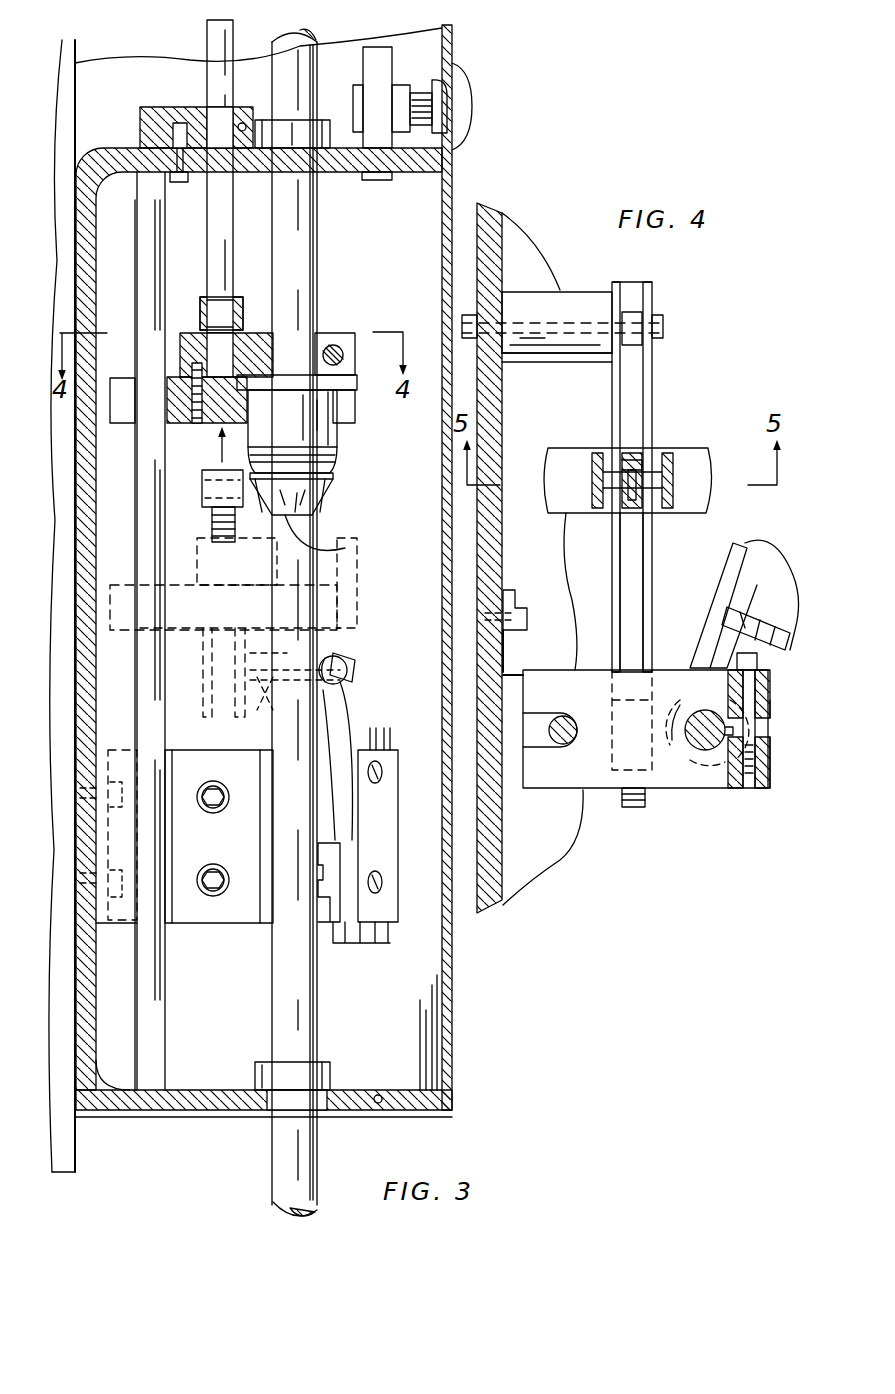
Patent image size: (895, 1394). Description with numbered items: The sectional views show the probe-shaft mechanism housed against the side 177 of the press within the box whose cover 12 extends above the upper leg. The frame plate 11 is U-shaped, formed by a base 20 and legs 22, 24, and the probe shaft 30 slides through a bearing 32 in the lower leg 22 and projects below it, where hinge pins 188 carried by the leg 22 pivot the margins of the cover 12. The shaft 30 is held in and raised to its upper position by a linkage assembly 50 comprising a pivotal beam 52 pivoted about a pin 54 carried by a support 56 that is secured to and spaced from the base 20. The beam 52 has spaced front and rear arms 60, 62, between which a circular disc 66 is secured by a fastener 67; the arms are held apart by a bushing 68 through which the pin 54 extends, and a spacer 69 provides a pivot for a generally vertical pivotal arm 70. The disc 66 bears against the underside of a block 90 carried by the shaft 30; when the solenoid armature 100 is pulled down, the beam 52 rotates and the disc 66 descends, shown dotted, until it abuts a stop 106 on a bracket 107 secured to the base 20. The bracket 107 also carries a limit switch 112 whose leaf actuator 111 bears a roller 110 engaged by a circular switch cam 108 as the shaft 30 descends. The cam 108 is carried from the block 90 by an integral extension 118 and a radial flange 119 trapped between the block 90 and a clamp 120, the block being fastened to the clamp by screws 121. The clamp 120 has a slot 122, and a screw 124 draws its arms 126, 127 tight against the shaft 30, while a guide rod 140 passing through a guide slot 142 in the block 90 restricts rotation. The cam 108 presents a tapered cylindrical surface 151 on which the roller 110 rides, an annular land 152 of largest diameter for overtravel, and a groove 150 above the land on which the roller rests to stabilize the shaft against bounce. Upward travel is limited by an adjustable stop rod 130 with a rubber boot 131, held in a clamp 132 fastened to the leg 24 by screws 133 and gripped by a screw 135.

In FIG. 4, the frame plate 11 is at (545, 875).
In FIG. 3, the cover 12 is at (446, 1065).
In FIG. 4, the base 20 is at (500, 230).
In FIG. 3, the leg 22 is at (178, 1110).
In FIG. 3, the leg 24 is at (352, 130).
In FIG. 3, the probe shaft 30 is at (303, 210).
In FIG. 4, the probe shaft 30 is at (695, 760).
In FIG. 3, the bearing 32 is at (320, 1078).
In FIG. 4, the linkage assembly 50 is at (712, 353).
In FIG. 3, the pivotal beam 52 is at (200, 455).
In FIG. 4, the pivotal beam 52 is at (652, 390).
In FIG. 4, the pin 54 is at (665, 325).
In FIG. 4, the support 56 is at (545, 290).
In FIG. 4, the front arm 60 is at (652, 588).
In FIG. 4, the rear arm 62 is at (612, 578).
In FIG. 3, the circular disc 66 is at (220, 540).
In FIG. 4, the circular disc 66 is at (635, 808).
In FIG. 3, the fastener 67 is at (208, 500).
In FIG. 4, the bushing 68 is at (632, 312).
In FIG. 4, the spacer 69 is at (628, 460).
In FIG. 4, the pivotal arm 70 is at (640, 470).
In FIG. 3, the block 90 is at (355, 412).
In FIG. 4, the armature 100 is at (695, 495).
In FIG. 3, the stop 106 is at (193, 760).
In FIG. 3, the bracket 107 is at (130, 915).
In FIG. 4, the bracket 107 is at (505, 648).
In FIG. 3, the switch cam 108 is at (325, 500).
In FIG. 3, the roller 110 is at (340, 655).
In FIG. 4, the roller 110 is at (745, 637).
In FIG. 3, the leaf actuator 111 is at (348, 730).
In FIG. 4, the leaf actuator 111 is at (735, 615).
In FIG. 3, the limit switch 112 is at (378, 800).
In FIG. 4, the limit switch 112 is at (760, 570).
In FIG. 3, the integral extension 118 is at (325, 470).
In FIG. 3, the radial flange 119 is at (280, 380).
In FIG. 3, the clamp 120 is at (328, 333).
In FIG. 4, the clamp 120 is at (765, 790).
In FIG. 3, the screws 121 is at (345, 356).
In FIG. 4, the slot 122 is at (775, 738).
In FIG. 4, the screw 124 is at (672, 708).
In FIG. 4, the arm 126 is at (775, 790).
In FIG. 3, the arm 127 is at (350, 333).
In FIG. 4, the arm 127 is at (740, 660).
In FIG. 3, the adjustable stop rod 130 is at (207, 82).
In FIG. 3, the rubber boot 131 is at (205, 300).
In FIG. 3, the clamp 132 is at (140, 110).
In FIG. 3, the screws 133 is at (170, 175).
In FIG. 3, the screw 135 is at (240, 124).
In FIG. 3, the guide rod 140 is at (150, 602).
In FIG. 4, the guide rod 140 is at (540, 729).
In FIG. 3, the guide slot 142 is at (118, 424).
In FIG. 4, the guide slot 142 is at (532, 713).
In FIG. 3, the groove 150 is at (300, 440).
In FIG. 3, the tapered cylindrical surface 151 is at (348, 546).
In FIG. 3, the annular land 152 is at (295, 470).
In FIG. 3, the side of the press 177 is at (80, 66).
In FIG. 3, the hinge pins 188 is at (380, 1105).